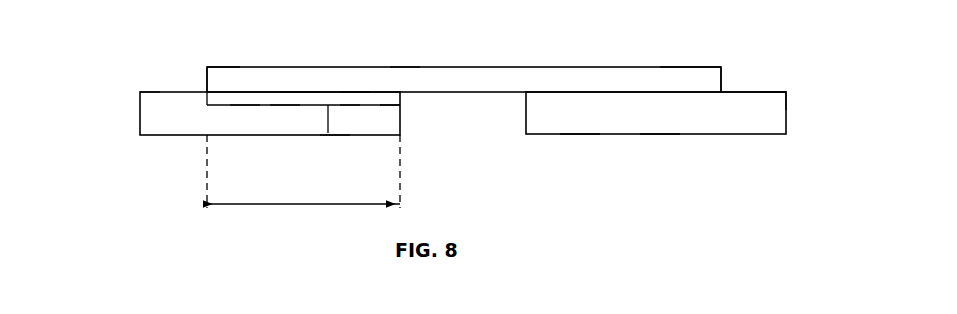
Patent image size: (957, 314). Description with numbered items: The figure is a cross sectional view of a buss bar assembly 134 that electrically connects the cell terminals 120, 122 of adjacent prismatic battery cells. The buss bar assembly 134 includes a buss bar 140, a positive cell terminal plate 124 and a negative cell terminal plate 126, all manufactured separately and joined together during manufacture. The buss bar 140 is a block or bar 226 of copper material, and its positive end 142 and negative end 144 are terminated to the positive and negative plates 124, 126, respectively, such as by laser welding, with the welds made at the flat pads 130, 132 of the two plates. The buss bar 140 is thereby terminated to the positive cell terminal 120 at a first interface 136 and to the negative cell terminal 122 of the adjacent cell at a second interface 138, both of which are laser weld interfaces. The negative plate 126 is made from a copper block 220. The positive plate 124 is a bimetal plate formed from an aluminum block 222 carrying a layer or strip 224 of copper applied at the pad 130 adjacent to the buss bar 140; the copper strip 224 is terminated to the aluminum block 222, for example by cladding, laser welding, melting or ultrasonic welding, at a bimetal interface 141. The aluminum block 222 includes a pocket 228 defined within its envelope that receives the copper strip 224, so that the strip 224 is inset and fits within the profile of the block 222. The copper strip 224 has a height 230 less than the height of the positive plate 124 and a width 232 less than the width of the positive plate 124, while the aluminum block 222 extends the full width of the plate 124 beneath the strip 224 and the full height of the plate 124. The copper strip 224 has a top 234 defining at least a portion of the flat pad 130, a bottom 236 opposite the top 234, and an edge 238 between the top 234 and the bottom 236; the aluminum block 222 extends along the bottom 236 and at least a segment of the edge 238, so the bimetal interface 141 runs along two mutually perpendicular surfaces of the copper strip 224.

The positive cell terminal 120 is at (244, 110).
The negative cell terminal 122 is at (659, 119).
The positive cell terminal plate 124 is at (147, 127).
The negative cell terminal plate 126 is at (777, 124).
The flat pad 130 is at (141, 92).
The flat pad 132 is at (772, 92).
The buss bar assembly 134 is at (781, 41).
The first interface 136 is at (206, 91).
The second interface 138 is at (728, 88).
The buss bar 140 is at (437, 72).
The bimetal interface 141 is at (206, 98).
The positive end 142 is at (217, 72).
The negative end 144 is at (678, 72).
The copper block 220 is at (580, 122).
The aluminum block 222 is at (337, 132).
The copper strip 224 is at (297, 98).
The bar 226 is at (400, 72).
The pocket 228 is at (283, 108).
The height 230 is at (328, 91).
The width 232 is at (282, 204).
The top 234 is at (355, 92).
The bottom 236 is at (347, 107).
The edge 238 is at (207, 105).